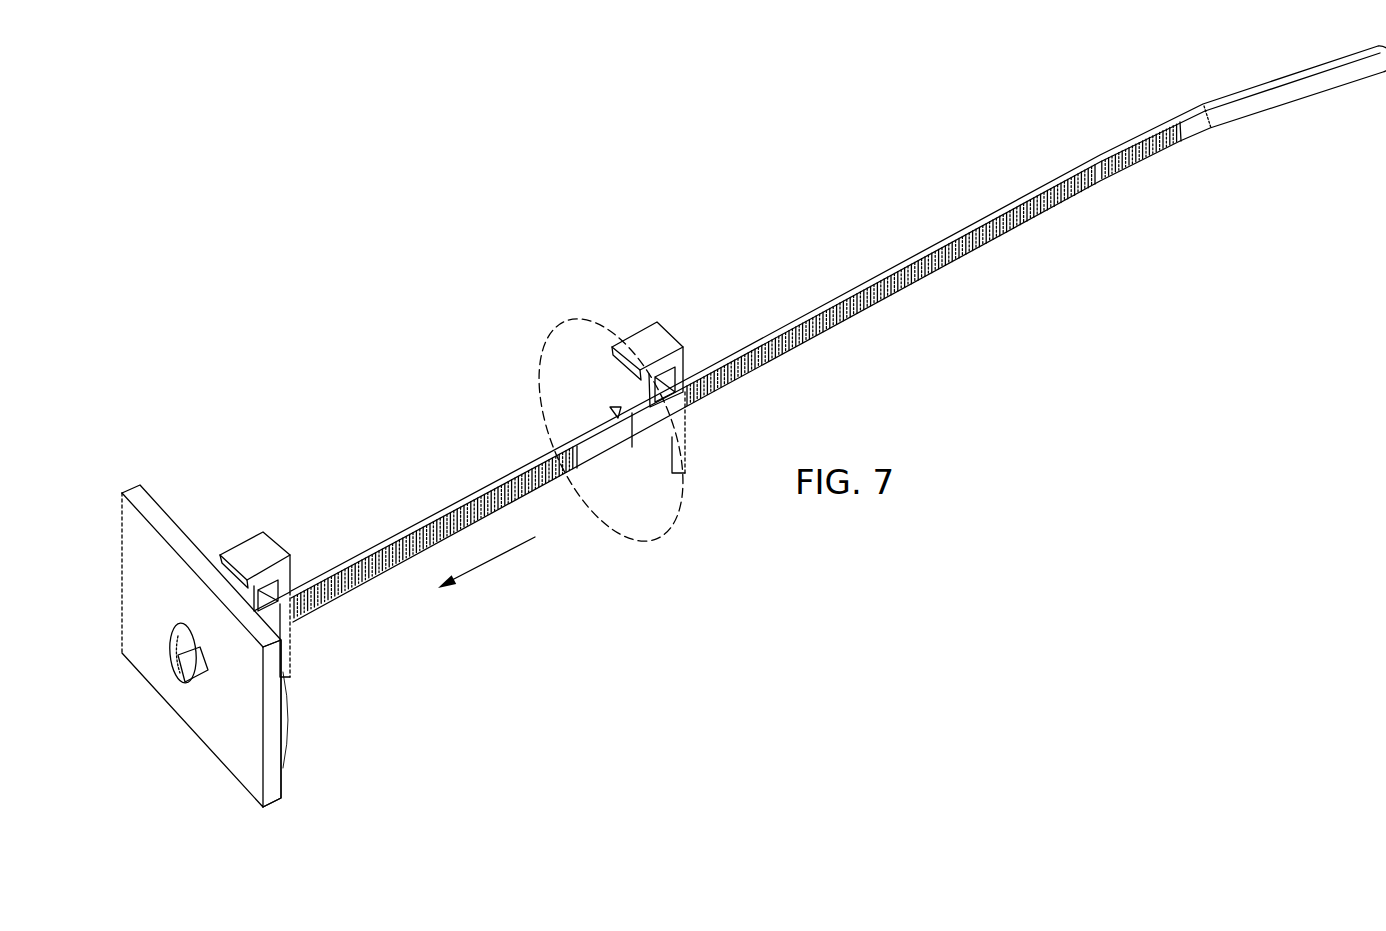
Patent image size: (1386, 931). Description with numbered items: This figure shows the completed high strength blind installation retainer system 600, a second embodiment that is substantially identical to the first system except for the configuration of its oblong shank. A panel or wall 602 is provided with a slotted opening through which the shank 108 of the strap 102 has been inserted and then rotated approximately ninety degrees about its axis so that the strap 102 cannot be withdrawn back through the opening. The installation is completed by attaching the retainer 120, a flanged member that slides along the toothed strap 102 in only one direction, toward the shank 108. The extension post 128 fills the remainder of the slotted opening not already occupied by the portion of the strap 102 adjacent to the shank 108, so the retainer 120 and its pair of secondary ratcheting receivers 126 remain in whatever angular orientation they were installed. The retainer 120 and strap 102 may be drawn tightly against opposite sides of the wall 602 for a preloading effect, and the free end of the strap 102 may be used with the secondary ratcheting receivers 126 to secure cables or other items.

The high strength blind installation retainer system 600 is at (371, 317).
The strap 102 is at (434, 506).
The retainer 120 is at (206, 545).
The secondary ratcheting receivers 126 is at (268, 541).
The shank 108 is at (177, 623).
The extension post 128 is at (205, 680).
The panel or wall 602 is at (285, 772).